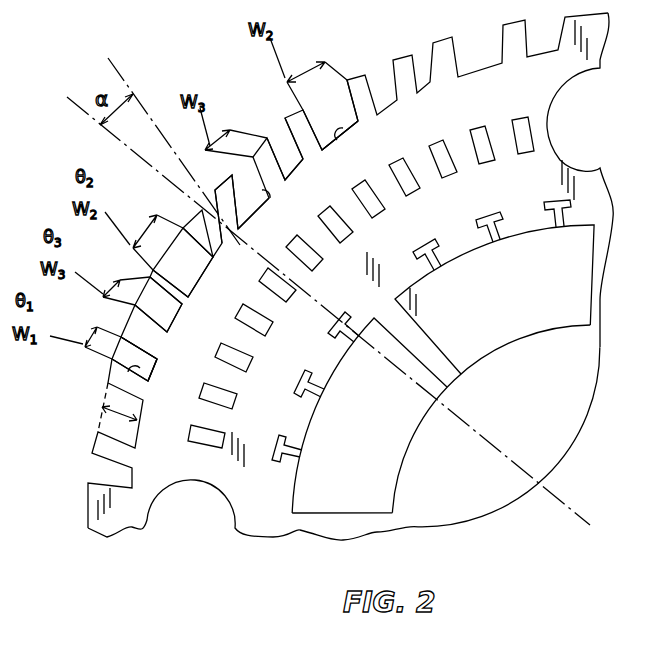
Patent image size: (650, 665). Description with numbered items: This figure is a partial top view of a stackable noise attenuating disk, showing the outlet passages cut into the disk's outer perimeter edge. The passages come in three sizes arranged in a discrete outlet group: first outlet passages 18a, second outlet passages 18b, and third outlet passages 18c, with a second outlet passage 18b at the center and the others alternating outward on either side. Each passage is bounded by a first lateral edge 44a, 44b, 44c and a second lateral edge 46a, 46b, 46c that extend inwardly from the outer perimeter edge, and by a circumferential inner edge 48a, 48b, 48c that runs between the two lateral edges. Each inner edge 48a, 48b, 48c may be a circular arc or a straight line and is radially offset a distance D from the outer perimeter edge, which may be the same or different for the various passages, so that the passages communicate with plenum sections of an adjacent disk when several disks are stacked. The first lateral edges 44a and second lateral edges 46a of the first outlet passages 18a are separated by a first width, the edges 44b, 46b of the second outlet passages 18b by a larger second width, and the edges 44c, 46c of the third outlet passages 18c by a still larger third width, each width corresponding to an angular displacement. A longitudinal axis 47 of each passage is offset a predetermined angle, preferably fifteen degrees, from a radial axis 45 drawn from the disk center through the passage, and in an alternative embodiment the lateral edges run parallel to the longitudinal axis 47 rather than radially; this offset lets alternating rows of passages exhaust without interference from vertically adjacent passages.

The first outlet passages 18a is at (158, 405).
The second outlet passages 18b is at (186, 281).
The third outlet passages 18c is at (270, 190).
The first lateral edge 44a is at (160, 340).
The first lateral edge 44b is at (358, 100).
The first lateral edge 44c is at (264, 146).
The second lateral edge 46a is at (128, 371).
The second lateral edge 46b is at (340, 145).
The second lateral edge 46c is at (262, 207).
The circumferential inner edge 48a is at (152, 372).
The circumferential inner edge 48b is at (352, 125).
The circumferential inner edge 48c is at (265, 203).
The radial axis 45 is at (72, 103).
The longitudinal axis 47 is at (120, 66).
The distance D is at (119, 423).